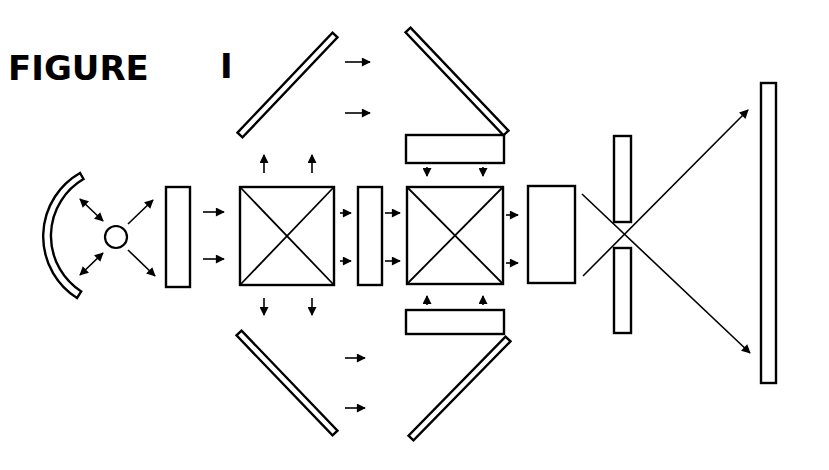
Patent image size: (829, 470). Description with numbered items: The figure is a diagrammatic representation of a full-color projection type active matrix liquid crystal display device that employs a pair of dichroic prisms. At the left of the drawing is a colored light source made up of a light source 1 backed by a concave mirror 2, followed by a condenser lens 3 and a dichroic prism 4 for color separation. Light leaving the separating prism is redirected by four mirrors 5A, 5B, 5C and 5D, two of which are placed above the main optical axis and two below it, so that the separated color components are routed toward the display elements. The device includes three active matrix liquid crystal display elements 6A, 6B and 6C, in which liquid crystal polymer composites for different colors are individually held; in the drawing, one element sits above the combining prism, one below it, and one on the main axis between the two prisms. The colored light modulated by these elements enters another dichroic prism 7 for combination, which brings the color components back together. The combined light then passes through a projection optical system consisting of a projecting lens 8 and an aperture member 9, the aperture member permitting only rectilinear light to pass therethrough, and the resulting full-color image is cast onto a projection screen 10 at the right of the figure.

The light source 1 is at (116, 226).
The concave mirror 2 is at (54, 200).
The condenser lens 3 is at (172, 287).
The dichroic prism for color separation 4 is at (241, 285).
The mirror 5A is at (296, 70).
The mirror 5B is at (464, 83).
The mirror 5C is at (265, 364).
The mirror 5D is at (478, 375).
The active matrix liquid crystal display element 6A is at (506, 147).
The active matrix liquid crystal display element 6B is at (372, 197).
The active matrix liquid crystal display element 6C is at (505, 325).
The dichroic prism for combination 7 is at (503, 284).
The projecting lens 8 is at (553, 208).
The aperture member 9 is at (622, 135).
The projection screen 10 is at (761, 373).